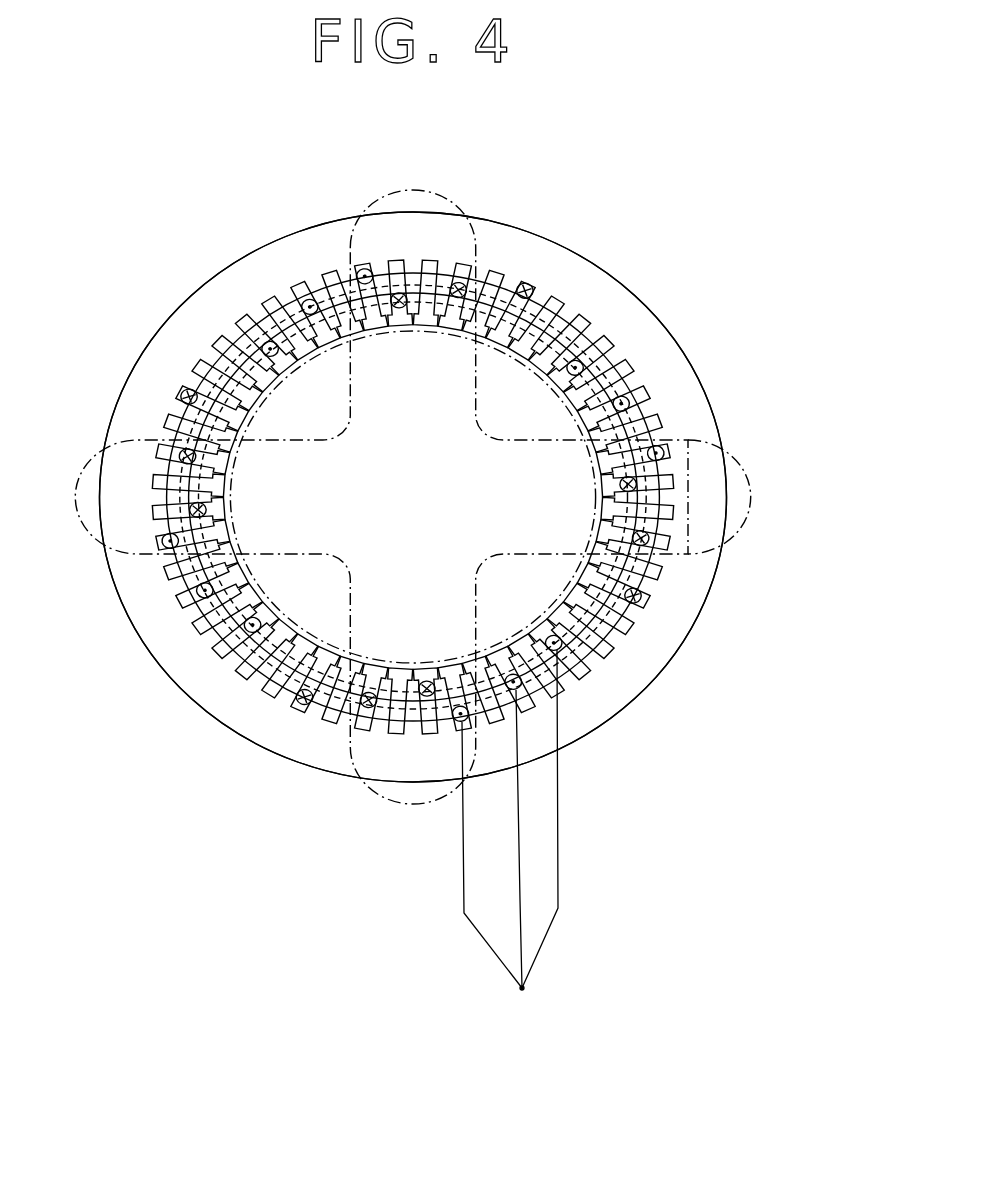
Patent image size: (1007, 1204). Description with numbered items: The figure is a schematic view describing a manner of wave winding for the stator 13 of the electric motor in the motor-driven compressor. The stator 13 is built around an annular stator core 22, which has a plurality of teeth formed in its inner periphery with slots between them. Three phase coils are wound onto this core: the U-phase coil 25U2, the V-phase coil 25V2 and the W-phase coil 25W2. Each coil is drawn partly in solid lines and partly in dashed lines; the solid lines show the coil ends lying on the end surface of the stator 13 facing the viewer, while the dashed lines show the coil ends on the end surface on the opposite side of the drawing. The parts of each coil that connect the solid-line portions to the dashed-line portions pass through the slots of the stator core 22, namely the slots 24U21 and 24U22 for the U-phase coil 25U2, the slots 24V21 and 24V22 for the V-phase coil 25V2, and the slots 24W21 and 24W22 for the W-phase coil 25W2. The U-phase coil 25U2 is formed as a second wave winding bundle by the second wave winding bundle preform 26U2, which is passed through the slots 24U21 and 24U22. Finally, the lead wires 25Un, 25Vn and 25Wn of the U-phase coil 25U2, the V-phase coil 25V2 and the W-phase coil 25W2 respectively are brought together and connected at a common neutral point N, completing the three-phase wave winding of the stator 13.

The stator 13 is at (691, 288).
The stator core 22 is at (687, 358).
The slot 24W21 is at (398, 263).
The slot 24V21 is at (459, 264).
The slot 24U21 is at (527, 282).
The slot 24U22 is at (362, 262).
The slot 24V22 is at (298, 283).
The slot 24W22 is at (262, 335).
The second wave winding bundle preform 26U2 is at (737, 527).
The W-phase coil 25W2 is at (615, 603).
The V-phase coil 25V2 is at (521, 700).
The U-phase coil 25U2 is at (464, 730).
The lead wire 25Un is at (464, 886).
The lead wire 25Vn is at (522, 867).
The lead wire 25Wn is at (560, 893).
The neutral point N is at (522, 988).